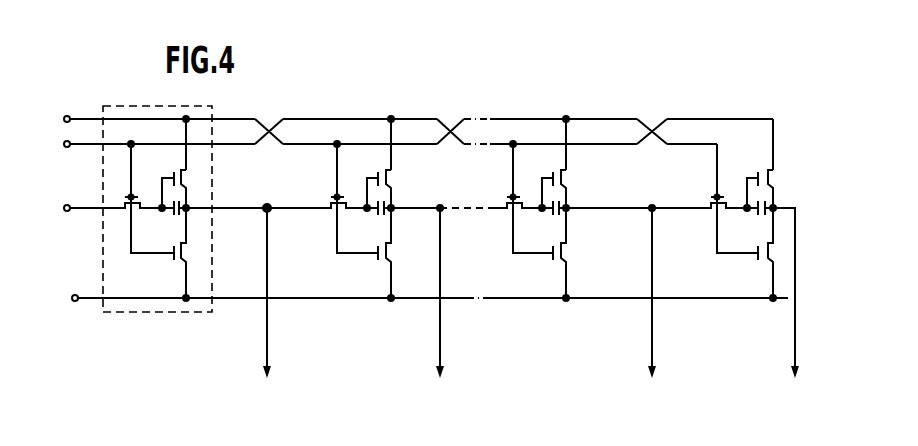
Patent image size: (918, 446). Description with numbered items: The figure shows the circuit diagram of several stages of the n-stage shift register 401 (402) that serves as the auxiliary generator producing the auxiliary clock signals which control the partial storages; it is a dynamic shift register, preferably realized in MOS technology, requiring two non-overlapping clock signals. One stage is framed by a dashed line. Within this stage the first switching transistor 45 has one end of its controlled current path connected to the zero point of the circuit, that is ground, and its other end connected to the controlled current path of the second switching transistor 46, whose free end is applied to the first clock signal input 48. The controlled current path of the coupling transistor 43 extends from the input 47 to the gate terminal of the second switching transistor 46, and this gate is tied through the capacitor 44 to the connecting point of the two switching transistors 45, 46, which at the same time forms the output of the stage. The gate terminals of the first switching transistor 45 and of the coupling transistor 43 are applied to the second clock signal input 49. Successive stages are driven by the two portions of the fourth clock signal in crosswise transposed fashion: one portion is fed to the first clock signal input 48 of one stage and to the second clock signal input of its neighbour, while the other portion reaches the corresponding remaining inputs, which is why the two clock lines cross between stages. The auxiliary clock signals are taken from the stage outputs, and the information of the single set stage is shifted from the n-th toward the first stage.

The n-stage shift register 401 is at (545, 82).
The n-stage shift register 402 is at (430, 298).
The coupling transistor 43 is at (129, 197).
The capacitor 44 is at (175, 217).
The first switching transistor 45 is at (181, 268).
The second switching transistor 46 is at (180, 174).
The input 47 is at (424, 284).
The first clock signal input 48 is at (174, 143).
The second clock signal input 49 is at (147, 190).